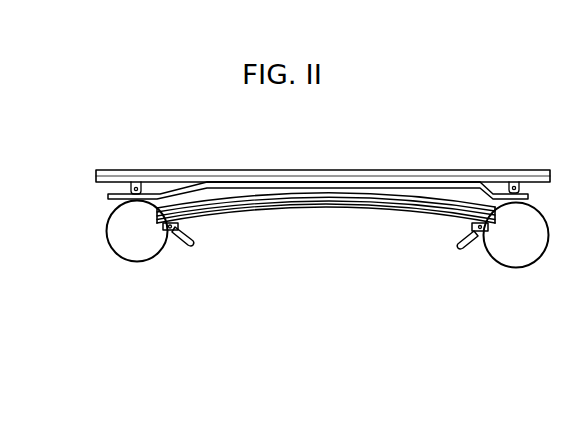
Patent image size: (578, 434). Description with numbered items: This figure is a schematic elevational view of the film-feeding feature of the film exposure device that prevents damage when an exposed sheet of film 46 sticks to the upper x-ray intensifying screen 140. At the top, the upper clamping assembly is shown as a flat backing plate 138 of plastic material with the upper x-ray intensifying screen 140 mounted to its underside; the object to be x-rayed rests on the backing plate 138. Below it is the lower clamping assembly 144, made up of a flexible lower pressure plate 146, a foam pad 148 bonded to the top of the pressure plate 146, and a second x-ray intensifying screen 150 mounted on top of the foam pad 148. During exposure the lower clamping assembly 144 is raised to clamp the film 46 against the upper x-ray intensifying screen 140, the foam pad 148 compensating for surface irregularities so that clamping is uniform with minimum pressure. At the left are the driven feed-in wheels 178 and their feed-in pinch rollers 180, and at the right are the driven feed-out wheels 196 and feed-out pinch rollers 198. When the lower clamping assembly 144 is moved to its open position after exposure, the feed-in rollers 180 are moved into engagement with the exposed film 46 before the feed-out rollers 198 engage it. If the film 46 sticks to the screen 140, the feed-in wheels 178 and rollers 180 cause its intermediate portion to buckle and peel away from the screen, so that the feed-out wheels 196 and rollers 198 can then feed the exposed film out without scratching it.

The sheet of film 46 is at (377, 178).
The backing plate 138 is at (238, 172).
The upper x-ray intensifying screen 140 is at (300, 171).
The lower clamping assembly 144 is at (372, 213).
The lower pressure plate 146 is at (320, 203).
The foam pad 148 is at (273, 205).
The second x-ray intensifying screen 150 is at (219, 216).
The film feed-in wheels 178 is at (127, 254).
The feed-in pinch rollers 180 is at (137, 172).
The feed-out wheels 196 is at (497, 256).
The feed-out pinch rollers 198 is at (518, 178).